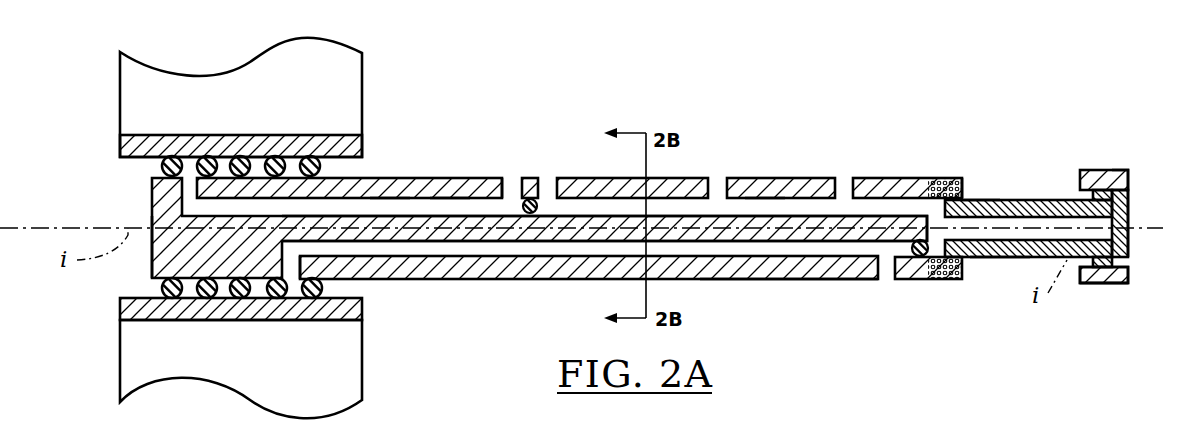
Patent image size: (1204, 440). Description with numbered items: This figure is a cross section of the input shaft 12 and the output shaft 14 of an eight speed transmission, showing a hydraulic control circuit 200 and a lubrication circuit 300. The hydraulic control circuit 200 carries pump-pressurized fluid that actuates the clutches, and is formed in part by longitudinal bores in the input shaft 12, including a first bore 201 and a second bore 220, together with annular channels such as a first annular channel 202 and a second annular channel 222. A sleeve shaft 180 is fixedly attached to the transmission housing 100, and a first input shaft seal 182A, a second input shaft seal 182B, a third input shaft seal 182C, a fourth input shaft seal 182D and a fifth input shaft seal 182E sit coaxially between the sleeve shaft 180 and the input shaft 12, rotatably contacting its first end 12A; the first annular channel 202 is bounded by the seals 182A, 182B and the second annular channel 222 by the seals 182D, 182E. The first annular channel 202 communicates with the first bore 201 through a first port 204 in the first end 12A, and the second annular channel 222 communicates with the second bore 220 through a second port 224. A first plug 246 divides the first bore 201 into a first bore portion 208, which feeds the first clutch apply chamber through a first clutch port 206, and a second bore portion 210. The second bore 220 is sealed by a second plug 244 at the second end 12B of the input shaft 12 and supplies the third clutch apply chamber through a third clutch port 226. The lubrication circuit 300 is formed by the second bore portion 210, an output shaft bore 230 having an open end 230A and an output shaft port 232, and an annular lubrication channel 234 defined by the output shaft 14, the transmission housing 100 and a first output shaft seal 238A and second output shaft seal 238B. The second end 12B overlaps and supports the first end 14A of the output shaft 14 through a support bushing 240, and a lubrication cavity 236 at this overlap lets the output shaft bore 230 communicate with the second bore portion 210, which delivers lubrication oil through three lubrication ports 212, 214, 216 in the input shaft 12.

The input shaft 12 is at (747, 280).
The first end of the input shaft 12A is at (126, 276).
The second end of the input shaft 12B is at (830, 294).
The output shaft 14 is at (1130, 258).
The first end of the output shaft 14A is at (1001, 276).
The transmission housing 100 is at (120, 78).
The sleeve shaft 180 is at (147, 322).
The first input shaft seal 182A is at (120, 140).
The second input shaft seal 182B is at (203, 157).
The third input shaft seal 182C is at (242, 157).
The fourth input shaft seal 182D is at (282, 152).
The fifth input shaft seal 182E is at (350, 135).
The hydraulic control circuit 200 is at (446, 362).
The first bore 201 is at (446, 200).
The first annular channel 202 is at (152, 180).
The first port 204 is at (182, 204).
The first clutch port 206 is at (505, 190).
The first bore portion 208 is at (390, 200).
The second bore portion 210 is at (763, 200).
The lubrication port 212 is at (559, 190).
The lubrication port 214 is at (724, 190).
The lubrication port 216 is at (848, 190).
The second bore 220 is at (460, 253).
The second annular channel 222 is at (298, 268).
The second port 224 is at (287, 268).
The third clutch port 226 is at (895, 268).
The output shaft bore 230 is at (1033, 216).
The open end of the output shaft bore 230A is at (980, 200).
The output shaft port 232 is at (1128, 222).
The annular lubrication channel 234 is at (1128, 203).
The lubrication cavity 236 is at (925, 186).
The first output shaft seal 238A is at (1080, 182).
The second output shaft seal 238B is at (1128, 190).
The support bushing 240 is at (934, 185).
The second plug 244 is at (915, 256).
The first plug 246 is at (533, 195).
The lubrication circuit 300 is at (1060, 362).